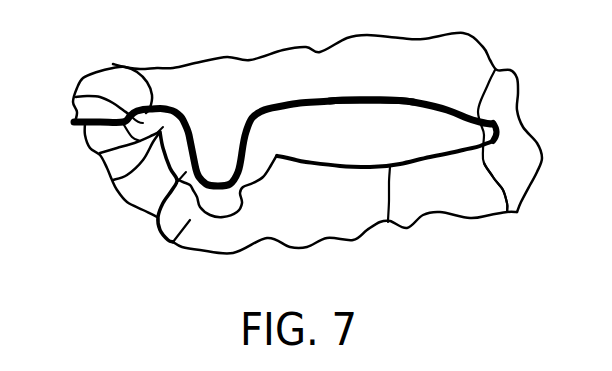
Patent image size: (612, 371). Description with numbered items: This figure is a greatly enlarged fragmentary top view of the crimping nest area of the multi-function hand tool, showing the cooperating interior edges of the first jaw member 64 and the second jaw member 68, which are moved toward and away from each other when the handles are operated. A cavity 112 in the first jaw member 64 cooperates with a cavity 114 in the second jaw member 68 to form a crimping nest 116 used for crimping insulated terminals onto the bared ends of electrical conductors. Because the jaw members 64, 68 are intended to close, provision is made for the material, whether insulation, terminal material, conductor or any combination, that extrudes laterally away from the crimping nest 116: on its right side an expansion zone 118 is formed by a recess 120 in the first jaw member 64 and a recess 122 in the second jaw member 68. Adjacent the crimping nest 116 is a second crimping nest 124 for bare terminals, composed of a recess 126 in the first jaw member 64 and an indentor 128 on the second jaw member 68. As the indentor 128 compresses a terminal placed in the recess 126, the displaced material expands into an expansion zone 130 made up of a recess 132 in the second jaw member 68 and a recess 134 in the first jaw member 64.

The first jaw member 64 is at (173, 242).
The second jaw member 68 is at (232, 110).
The cavity 112 is at (388, 222).
The cavity 114 is at (365, 100).
The crimping nest 116 is at (380, 127).
The expansion zone 118 is at (490, 132).
The recess 120 is at (508, 212).
The recess 122 is at (495, 70).
The crimping nest 124 is at (113, 180).
The recess 126 is at (157, 217).
The indentor 128 is at (215, 143).
The expansion zone 130 is at (76, 97).
The recess 132 is at (113, 64).
The recess 134 is at (100, 153).